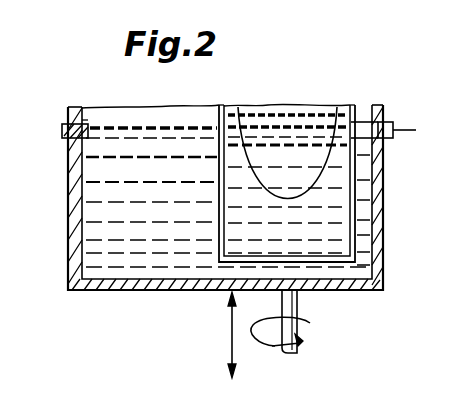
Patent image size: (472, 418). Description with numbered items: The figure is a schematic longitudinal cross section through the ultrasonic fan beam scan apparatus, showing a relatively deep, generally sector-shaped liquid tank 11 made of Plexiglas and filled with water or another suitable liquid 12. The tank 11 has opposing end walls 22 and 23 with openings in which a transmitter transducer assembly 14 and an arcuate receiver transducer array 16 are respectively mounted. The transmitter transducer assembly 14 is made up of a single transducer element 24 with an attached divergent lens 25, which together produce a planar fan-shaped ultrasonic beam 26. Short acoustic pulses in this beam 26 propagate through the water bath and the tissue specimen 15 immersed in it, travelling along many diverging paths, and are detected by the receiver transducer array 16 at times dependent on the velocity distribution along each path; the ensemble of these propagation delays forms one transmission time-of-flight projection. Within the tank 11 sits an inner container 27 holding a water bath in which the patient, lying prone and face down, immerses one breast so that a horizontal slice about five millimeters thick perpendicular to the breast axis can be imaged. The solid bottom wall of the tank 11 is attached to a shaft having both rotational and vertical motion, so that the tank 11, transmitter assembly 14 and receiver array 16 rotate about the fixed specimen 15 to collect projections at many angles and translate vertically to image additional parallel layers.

The liquid tank 11 is at (387, 198).
The liquid 12 is at (150, 116).
The transmitter transducer assembly 14 is at (61, 129).
The tissue specimen 15 is at (284, 110).
The arcuate receiver transducer array 16 is at (386, 113).
The end wall 22 is at (80, 262).
The end wall 23 is at (378, 233).
The transducer element 24 is at (68, 138).
The divergent lens 25 is at (83, 122).
The fan-shaped ultrasonic beam 26 is at (142, 138).
The inner container 27 is at (218, 163).